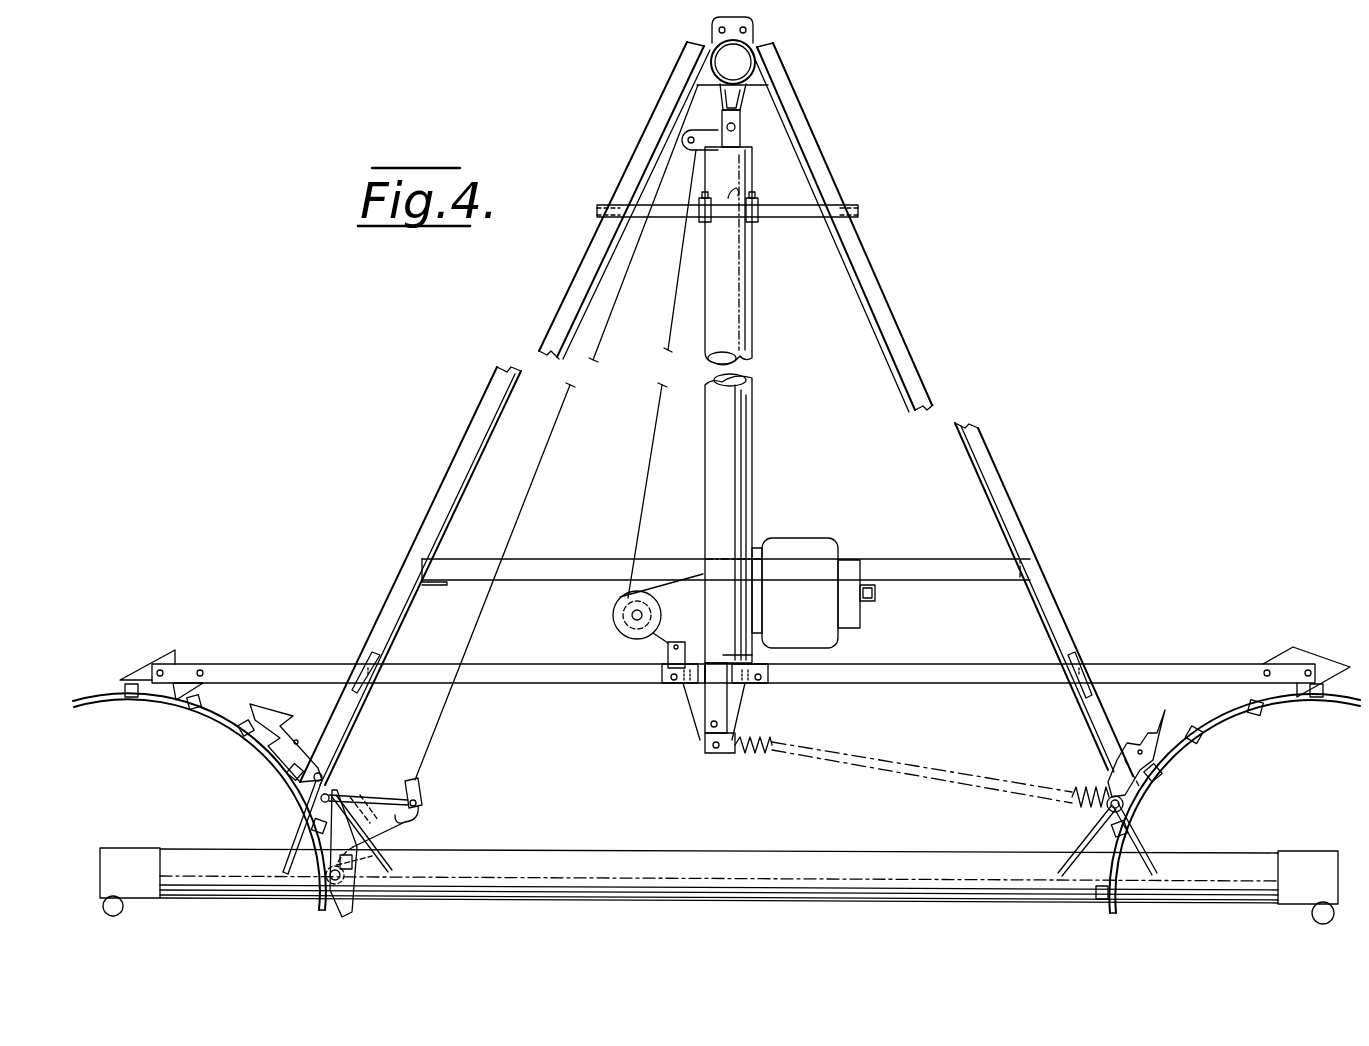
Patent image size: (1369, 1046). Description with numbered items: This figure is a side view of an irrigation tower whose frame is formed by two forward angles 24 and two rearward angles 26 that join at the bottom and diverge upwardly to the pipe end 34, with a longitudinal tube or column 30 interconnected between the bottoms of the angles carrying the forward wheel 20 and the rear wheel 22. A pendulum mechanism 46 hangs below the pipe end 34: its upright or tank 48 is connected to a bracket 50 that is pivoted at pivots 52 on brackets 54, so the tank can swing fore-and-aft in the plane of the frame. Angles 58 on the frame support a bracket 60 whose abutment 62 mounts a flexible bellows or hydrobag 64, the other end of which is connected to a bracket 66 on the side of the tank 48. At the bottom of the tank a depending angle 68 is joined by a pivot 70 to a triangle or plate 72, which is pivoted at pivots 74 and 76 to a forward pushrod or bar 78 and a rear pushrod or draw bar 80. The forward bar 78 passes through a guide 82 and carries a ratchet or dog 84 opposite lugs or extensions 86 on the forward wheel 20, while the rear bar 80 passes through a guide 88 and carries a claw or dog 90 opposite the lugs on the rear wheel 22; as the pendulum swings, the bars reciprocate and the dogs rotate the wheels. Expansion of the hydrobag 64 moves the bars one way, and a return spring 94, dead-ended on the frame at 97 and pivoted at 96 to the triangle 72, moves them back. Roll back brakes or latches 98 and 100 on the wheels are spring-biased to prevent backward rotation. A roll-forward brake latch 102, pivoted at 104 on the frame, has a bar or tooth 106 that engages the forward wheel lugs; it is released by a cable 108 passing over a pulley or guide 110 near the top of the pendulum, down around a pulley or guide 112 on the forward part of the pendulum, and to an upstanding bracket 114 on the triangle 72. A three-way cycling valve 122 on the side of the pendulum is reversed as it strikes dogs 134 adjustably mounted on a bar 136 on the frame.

The forward wheel 20 is at (258, 766).
The rear wheel 22 is at (1225, 732).
The forward angles 24 is at (548, 350).
The rearward angles 26 is at (938, 408).
The longitudinal tube or column 30 is at (630, 855).
The pipe end 34 is at (716, 50).
The pendulum mechanism 46 is at (755, 422).
The upright or tank 48 is at (742, 480).
The bracket 50 is at (740, 157).
The pivots 52 is at (740, 125).
The brackets 54 is at (716, 102).
The angles 58 is at (1003, 582).
The bracket 60 is at (872, 604).
The abutment 62 is at (858, 562).
The flexible bellows or hydrobag 64 is at (802, 545).
The bracket 66 is at (758, 545).
The depending angle 68 is at (730, 712).
The pivot 70 is at (705, 742).
The triangle or plate 72 is at (692, 718).
The pivot 74 is at (668, 688).
The pivot 76 is at (762, 685).
The forward pushrod or bar 78 is at (568, 687).
The rear pushrod or draw bar 80 is at (1010, 687).
The guide 82 is at (372, 660).
The ratchet or dog 84 is at (180, 688).
The lugs or extensions 86 is at (197, 702).
The guide 88 is at (1078, 660).
The claw or dog 90 is at (1300, 650).
The return spring 94 is at (1055, 803).
The pivot 96 is at (722, 755).
The dead end 97 is at (1125, 800).
The roll back brake or latch 98 is at (280, 712).
The roll back brake or latch 100 is at (1164, 714).
The latch 102 is at (395, 826).
The pivot 104 is at (345, 795).
The bar or tooth 106 is at (380, 858).
The cable 108 is at (650, 433).
The pulley or guide 110 is at (683, 137).
The pulley or guide 112 is at (618, 616).
The upstanding bracket 114 is at (667, 652).
The three-way cycling valve 122 is at (737, 198).
The dogs 134 is at (750, 220).
The bar 136 is at (792, 222).